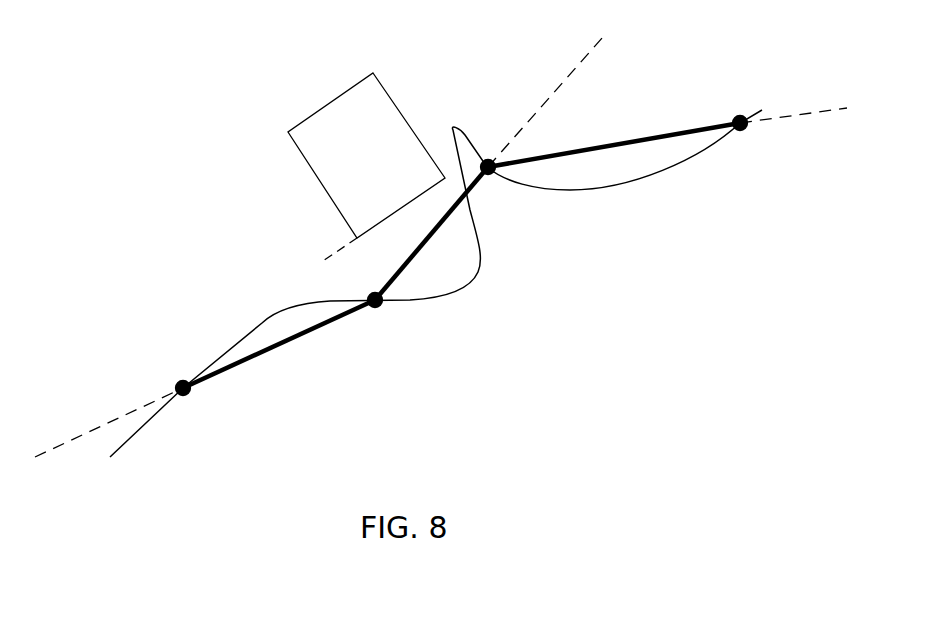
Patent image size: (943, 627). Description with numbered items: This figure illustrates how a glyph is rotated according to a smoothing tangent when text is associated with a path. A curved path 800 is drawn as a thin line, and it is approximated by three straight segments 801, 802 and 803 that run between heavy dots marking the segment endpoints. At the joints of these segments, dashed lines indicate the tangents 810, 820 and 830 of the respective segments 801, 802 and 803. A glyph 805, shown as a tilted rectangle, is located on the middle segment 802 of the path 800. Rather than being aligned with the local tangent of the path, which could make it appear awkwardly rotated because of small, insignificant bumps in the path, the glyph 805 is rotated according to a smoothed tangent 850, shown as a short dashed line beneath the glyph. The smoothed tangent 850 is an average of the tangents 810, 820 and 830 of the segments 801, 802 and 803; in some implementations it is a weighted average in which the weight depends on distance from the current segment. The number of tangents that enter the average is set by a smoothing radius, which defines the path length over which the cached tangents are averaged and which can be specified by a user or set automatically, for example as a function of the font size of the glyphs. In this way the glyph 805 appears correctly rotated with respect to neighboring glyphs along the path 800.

The path 800 is at (148, 428).
The segment 801 is at (275, 348).
The segment 802 is at (420, 252).
The segment 803 is at (627, 145).
The glyph 805 is at (330, 92).
The tangent 810 is at (113, 412).
The tangent 820 is at (567, 72).
The tangent 830 is at (815, 108).
The smoothed tangent 850 is at (327, 250).